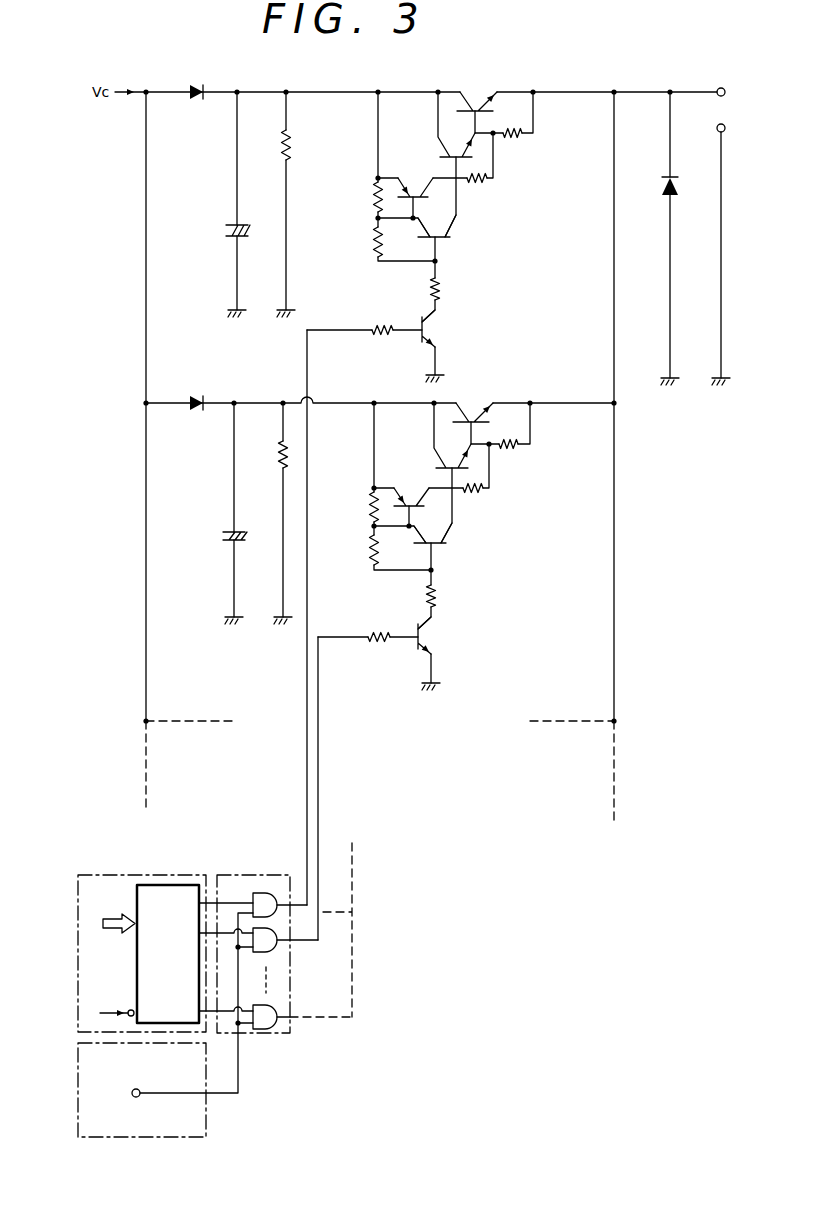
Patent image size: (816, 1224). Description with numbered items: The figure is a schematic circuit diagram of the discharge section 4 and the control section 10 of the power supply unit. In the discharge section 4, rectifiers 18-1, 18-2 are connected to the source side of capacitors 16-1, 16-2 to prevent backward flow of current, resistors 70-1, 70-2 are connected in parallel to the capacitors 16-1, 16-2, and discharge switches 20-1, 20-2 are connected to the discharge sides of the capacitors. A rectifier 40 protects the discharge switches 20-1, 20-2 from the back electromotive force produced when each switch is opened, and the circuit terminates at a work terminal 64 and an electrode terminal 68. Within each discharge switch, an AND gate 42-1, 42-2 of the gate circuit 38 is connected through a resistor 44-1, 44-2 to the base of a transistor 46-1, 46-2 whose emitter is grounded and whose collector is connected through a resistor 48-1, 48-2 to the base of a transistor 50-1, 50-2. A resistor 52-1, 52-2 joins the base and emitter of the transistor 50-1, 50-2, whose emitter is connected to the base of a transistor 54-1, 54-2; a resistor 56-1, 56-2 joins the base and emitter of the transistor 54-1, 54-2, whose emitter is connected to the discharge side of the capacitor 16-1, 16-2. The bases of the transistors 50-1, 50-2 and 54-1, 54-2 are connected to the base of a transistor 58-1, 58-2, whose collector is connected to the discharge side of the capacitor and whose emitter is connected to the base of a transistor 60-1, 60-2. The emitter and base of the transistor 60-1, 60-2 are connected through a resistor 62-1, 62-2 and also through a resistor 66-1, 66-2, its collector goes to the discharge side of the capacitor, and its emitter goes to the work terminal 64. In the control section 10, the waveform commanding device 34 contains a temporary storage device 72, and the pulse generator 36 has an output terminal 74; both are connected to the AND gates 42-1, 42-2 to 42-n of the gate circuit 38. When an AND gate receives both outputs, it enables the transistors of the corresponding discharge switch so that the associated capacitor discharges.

The discharge section 4 is at (645, 62).
The control section 10 is at (68, 860).
The capacitor 16-1 is at (228, 222).
The capacitor 16-2 is at (226, 528).
The rectifier 18-1 is at (202, 80).
The rectifier 18-2 is at (204, 392).
The discharge switch 20-1 is at (528, 83).
The discharge switch 20-2 is at (524, 395).
The waveform commanding device 34 is at (110, 872).
The pulse generator 36 is at (206, 1115).
The gate circuit 38 is at (292, 1028).
The rectifier 40 is at (665, 194).
The AND gate 42-1 is at (257, 892).
The AND gate 42-2 is at (275, 950).
The AND gate 42-n is at (270, 1033).
The resistor 44-1 is at (378, 322).
The resistor 44-2 is at (378, 648).
The transistor 46-1 is at (418, 336).
The transistor 46-2 is at (429, 636).
The resistor 48-1 is at (441, 288).
The resistor 48-2 is at (428, 589).
The transistor 50-1 is at (448, 239).
The transistor 50-2 is at (443, 548).
The resistor 52-1 is at (372, 237).
The resistor 52-2 is at (370, 547).
The transistor 54-1 is at (415, 183).
The transistor 54-2 is at (410, 493).
The resistor 56-1 is at (373, 193).
The resistor 56-2 is at (370, 500).
The transistor 58-1 is at (440, 145).
The transistor 58-2 is at (435, 457).
The transistor 60-1 is at (477, 93).
The transistor 60-2 is at (474, 404).
The resistor 62-1 is at (482, 185).
The resistor 62-2 is at (477, 497).
The work terminal 64 is at (725, 90).
The resistor 66-1 is at (518, 138).
The resistor 66-2 is at (517, 453).
The electrode terminal 68 is at (725, 131).
The resistor 70-1 is at (291, 160).
The resistor 70-2 is at (281, 458).
The temporary storage device 72 is at (137, 958).
The output terminal 74 is at (133, 1090).